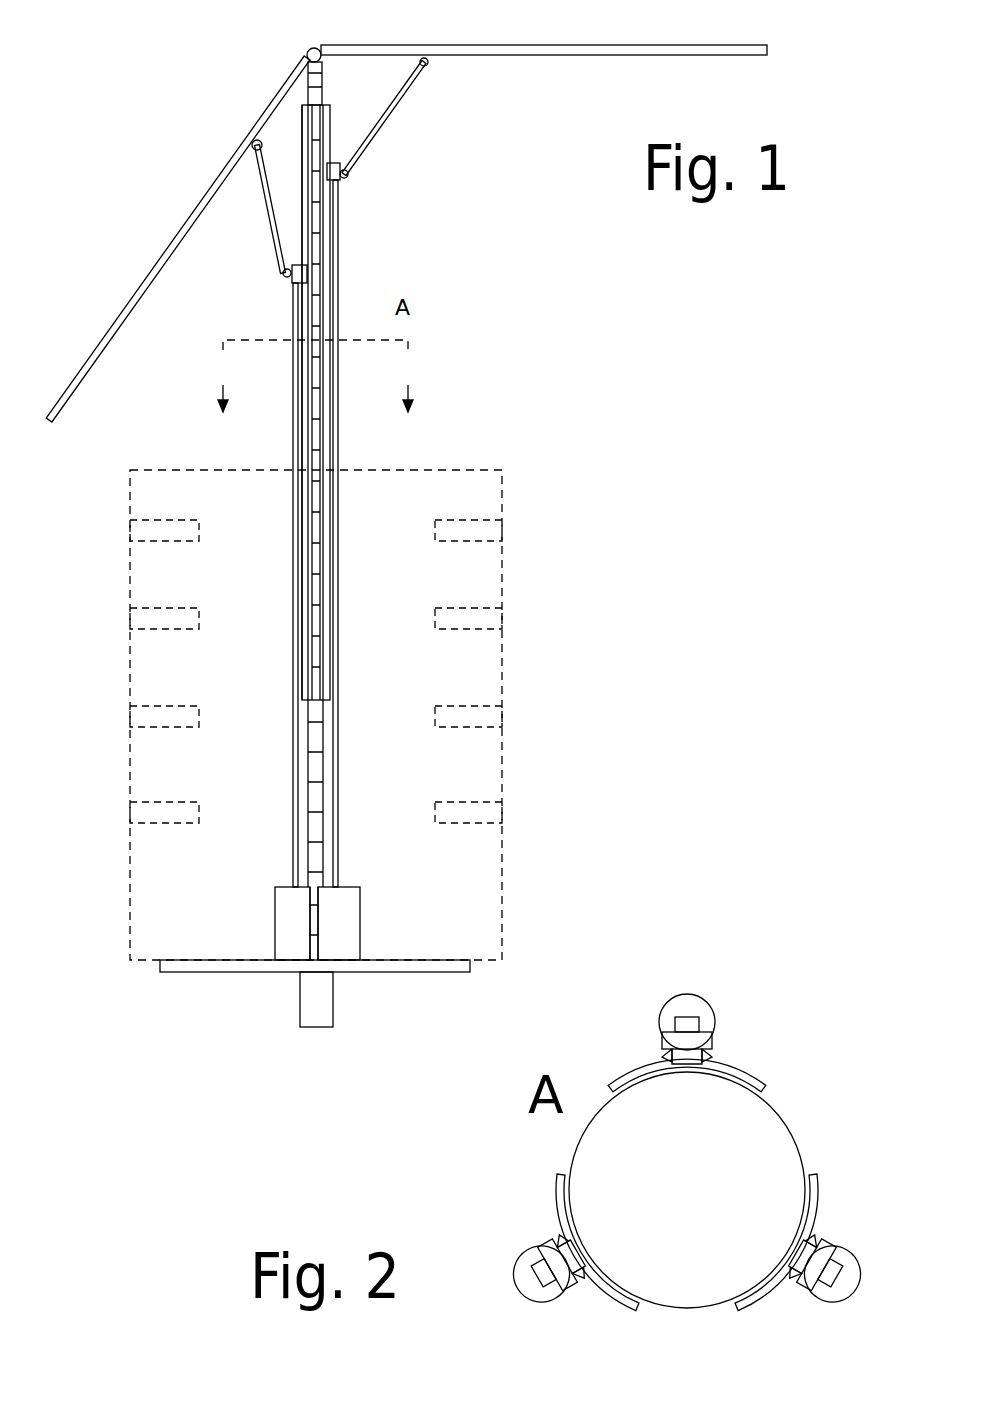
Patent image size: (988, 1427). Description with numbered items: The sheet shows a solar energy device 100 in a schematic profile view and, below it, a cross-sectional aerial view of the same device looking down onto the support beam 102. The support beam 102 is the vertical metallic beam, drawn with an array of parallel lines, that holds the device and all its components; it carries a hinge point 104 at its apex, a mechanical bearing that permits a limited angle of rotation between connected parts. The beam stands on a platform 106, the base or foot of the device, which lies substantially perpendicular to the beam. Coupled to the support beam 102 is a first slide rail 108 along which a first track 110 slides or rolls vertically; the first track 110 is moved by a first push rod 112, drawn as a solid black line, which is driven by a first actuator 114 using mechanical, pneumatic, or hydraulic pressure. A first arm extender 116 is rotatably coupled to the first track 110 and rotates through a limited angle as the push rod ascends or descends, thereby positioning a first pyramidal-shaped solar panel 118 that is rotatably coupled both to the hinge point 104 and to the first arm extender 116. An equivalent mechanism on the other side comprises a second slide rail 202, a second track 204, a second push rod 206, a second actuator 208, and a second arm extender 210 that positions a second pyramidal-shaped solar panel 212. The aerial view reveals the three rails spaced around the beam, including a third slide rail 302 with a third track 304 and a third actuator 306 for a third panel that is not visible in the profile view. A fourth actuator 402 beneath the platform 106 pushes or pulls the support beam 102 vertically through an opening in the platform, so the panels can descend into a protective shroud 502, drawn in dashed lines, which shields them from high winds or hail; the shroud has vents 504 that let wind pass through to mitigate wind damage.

In FIG. 1, the solar energy device 100 is at (158, 60).
In FIG. 1, the support beam 102 is at (324, 100).
In FIG. 2, the support beam 102 is at (704, 1190).
In FIG. 1, the hinge point 104 is at (309, 49).
In FIG. 1, the platform 106 is at (397, 973).
In FIG. 1, the first slide rail 108 is at (302, 162).
In FIG. 2, the first slide rail 108 is at (613, 1309).
In FIG. 1, the first track 110 is at (293, 283).
In FIG. 2, the first track 110 is at (548, 1249).
In FIG. 1, the first push rod 112 is at (293, 570).
In FIG. 1, the first actuator 114 is at (275, 926).
In FIG. 2, the first actuator 114 is at (510, 1291).
In FIG. 1, the first arm extender 116 is at (266, 200).
In FIG. 1, the first pyramidal-shaped solar panel 118 is at (157, 264).
In FIG. 1, the second slide rail 202 is at (330, 135).
In FIG. 2, the second slide rail 202 is at (752, 1314).
In FIG. 1, the second track 204 is at (341, 180).
In FIG. 2, the second track 204 is at (801, 1286).
In FIG. 1, the second push rod 206 is at (341, 270).
In FIG. 1, the second actuator 208 is at (361, 926).
In FIG. 2, the second actuator 208 is at (857, 1296).
In FIG. 1, the second arm extender 210 is at (364, 156).
In FIG. 1, the second pyramidal-shaped solar panel 212 is at (593, 55).
In FIG. 2, the third slide rail 302 is at (735, 1066).
In FIG. 2, the third track 304 is at (660, 1041).
In FIG. 2, the third actuator 306 is at (700, 993).
In FIG. 1, the fourth actuator 402 is at (310, 1028).
In FIG. 1, the protective shroud 502 is at (478, 468).
In FIG. 1, the vents 504 is at (132, 530).